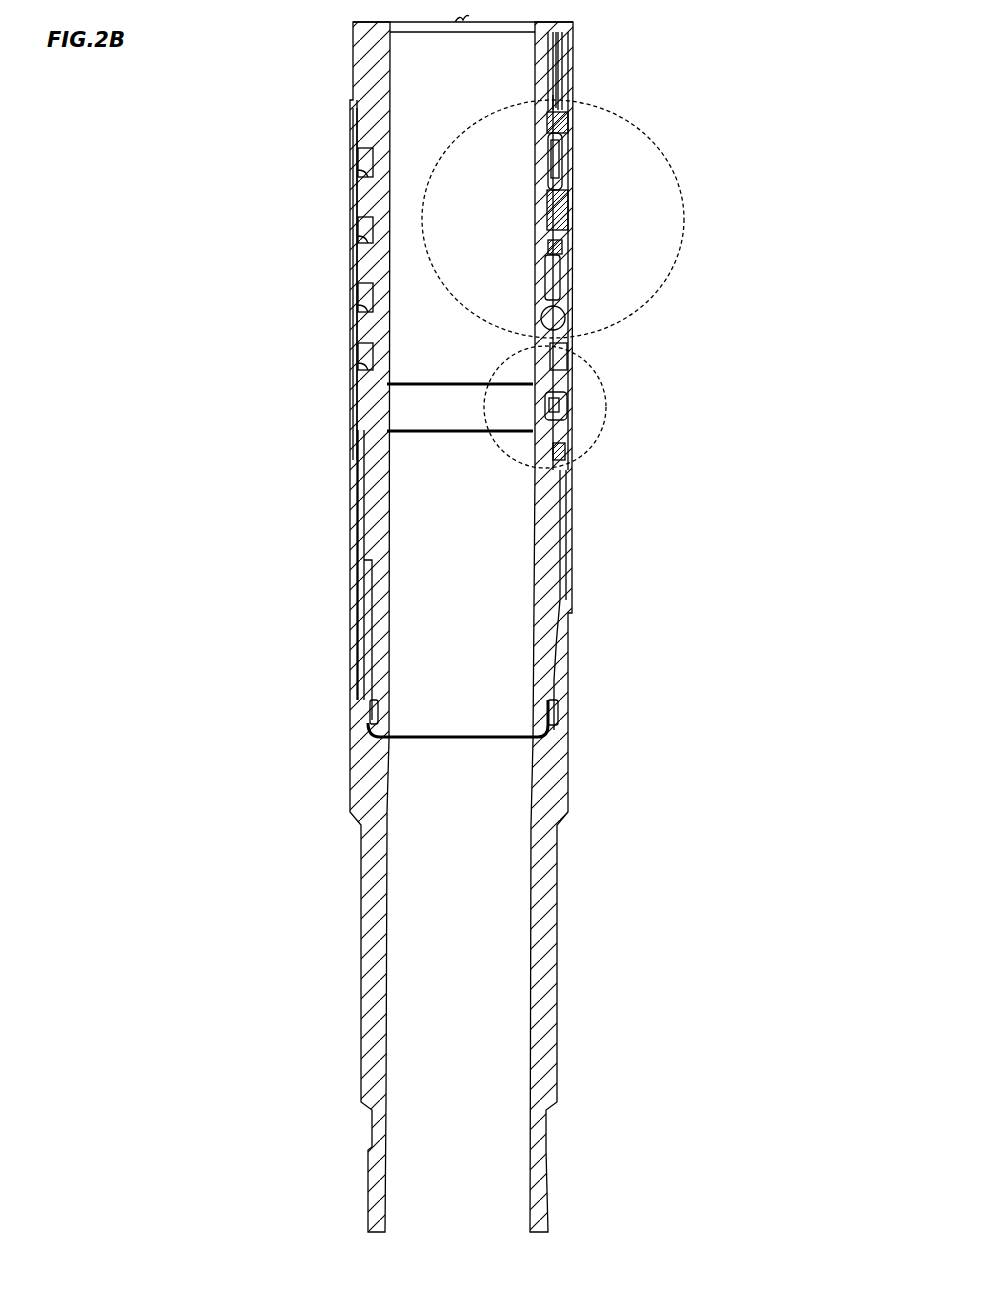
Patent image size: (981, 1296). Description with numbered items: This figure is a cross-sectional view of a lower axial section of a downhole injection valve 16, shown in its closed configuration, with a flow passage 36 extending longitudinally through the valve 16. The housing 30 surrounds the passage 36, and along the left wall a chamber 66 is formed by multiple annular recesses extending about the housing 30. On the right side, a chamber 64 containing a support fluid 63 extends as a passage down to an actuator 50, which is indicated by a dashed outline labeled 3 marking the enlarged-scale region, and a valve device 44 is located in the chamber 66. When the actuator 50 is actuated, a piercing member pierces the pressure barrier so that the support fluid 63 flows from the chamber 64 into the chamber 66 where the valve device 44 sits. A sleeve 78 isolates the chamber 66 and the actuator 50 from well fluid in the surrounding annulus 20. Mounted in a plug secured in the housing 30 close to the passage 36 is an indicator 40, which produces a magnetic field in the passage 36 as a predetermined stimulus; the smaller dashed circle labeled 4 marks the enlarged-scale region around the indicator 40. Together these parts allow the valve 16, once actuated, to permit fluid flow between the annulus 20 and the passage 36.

The injection valve 16 is at (762, 112).
The annulus 20 is at (607, 670).
The housing 30 is at (358, 92).
The flow passage 36 is at (468, 640).
The indicator 40 is at (533, 402).
The valve device 44 is at (572, 209).
The actuator 50 is at (593, 182).
The support fluid 63 is at (552, 90).
The chamber 64 is at (545, 56).
The chamber 66 is at (358, 162).
The sleeve 78 is at (573, 585).
The detail area of FIG. 3 is at (672, 288).
The detail area of FIG. 4 is at (606, 418).